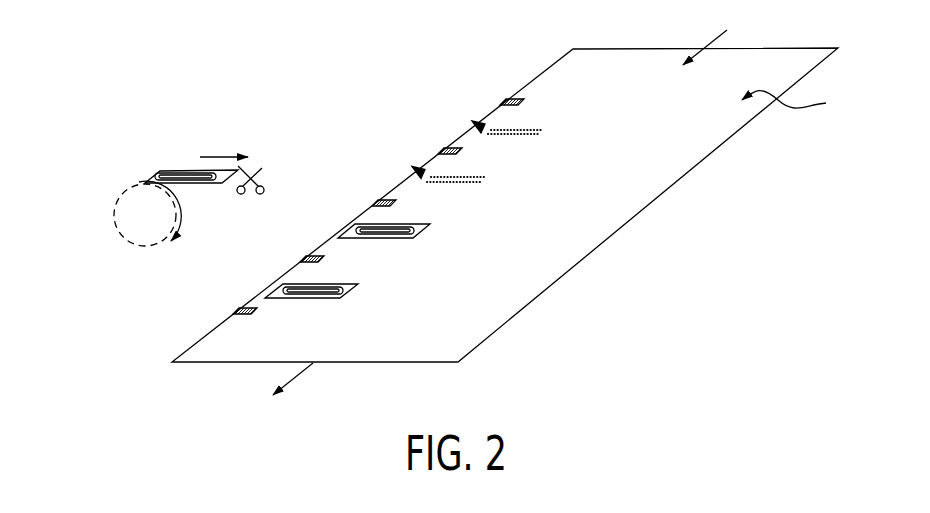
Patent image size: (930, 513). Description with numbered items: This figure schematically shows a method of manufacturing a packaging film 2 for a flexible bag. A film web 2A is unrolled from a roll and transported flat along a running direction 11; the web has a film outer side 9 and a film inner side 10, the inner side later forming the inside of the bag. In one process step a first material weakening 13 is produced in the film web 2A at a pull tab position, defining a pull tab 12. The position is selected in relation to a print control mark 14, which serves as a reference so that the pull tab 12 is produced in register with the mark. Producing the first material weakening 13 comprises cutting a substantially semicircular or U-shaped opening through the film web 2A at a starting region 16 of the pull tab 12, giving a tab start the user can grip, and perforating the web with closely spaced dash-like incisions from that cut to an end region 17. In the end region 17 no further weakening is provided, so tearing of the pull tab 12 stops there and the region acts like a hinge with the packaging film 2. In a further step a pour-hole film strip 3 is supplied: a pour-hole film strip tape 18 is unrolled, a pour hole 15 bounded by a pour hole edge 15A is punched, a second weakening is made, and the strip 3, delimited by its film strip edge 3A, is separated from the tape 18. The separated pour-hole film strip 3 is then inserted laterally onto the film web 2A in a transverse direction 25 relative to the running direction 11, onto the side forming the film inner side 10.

The packaging film 2 is at (526, 306).
The film web 2A is at (588, 62).
The pour-hole film strip 3 is at (110, 157).
The film strip edge 3A is at (340, 232).
The film outer side 9 is at (698, 188).
The film inner side 10 is at (795, 102).
The running direction 11 is at (710, 44).
The pull tab 12 is at (534, 125).
The first material weakening 13 is at (541, 138).
The print control mark 14 is at (235, 312).
The pour hole 15 is at (163, 174).
The pour hole edge 15A is at (186, 176).
The starting region 16 is at (414, 170).
The end region 17 is at (548, 132).
The pour-hole film strip tape 18 is at (113, 212).
The transverse direction 25 is at (208, 156).